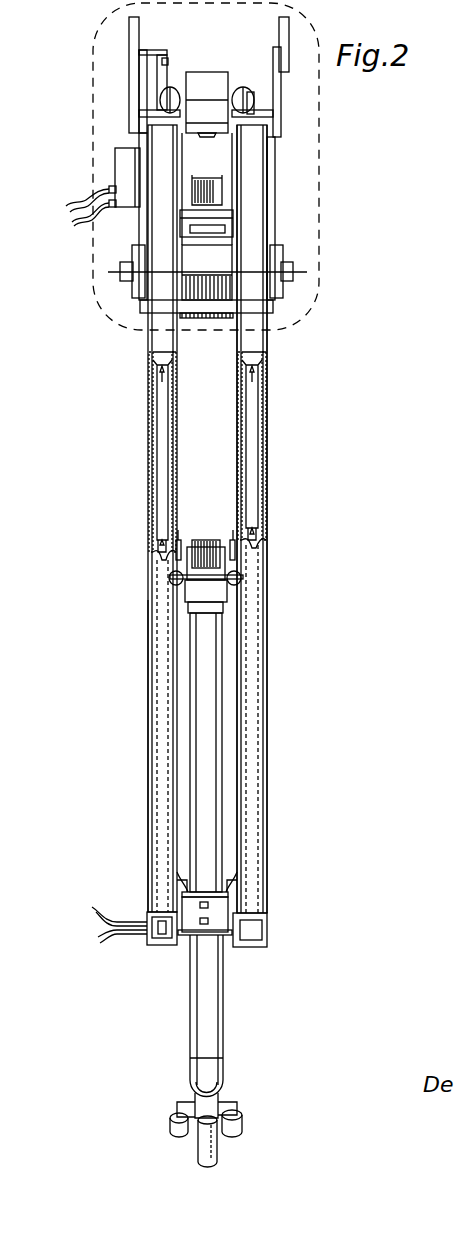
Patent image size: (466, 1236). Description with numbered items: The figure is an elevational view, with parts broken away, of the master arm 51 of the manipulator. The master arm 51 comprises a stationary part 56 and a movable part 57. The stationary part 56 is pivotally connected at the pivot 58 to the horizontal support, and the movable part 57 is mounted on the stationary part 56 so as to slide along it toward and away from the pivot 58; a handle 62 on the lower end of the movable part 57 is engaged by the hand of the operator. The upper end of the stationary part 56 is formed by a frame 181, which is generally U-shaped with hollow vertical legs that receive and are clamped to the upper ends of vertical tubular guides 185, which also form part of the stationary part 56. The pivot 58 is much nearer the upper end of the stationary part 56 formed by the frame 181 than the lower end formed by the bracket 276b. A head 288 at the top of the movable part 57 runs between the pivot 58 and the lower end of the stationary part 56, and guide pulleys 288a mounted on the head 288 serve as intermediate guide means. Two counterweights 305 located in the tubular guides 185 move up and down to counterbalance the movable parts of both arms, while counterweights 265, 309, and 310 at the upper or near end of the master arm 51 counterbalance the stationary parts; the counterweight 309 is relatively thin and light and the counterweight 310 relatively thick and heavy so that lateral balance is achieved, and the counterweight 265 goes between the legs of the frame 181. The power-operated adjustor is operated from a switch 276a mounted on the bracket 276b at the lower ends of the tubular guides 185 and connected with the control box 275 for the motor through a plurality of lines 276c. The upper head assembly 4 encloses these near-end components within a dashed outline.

The head assembly 4 is at (318, 160).
The counterweight 309 is at (130, 31).
The counterweight 310 is at (280, 30).
The counterweight 265 is at (198, 84).
The frame 181 is at (300, 228).
The pivot 58 is at (120, 272).
The control box 275 is at (127, 163).
The lines 276c is at (86, 196).
The master arm 51 is at (275, 389).
The tubular guides 185 is at (160, 757).
The counterweights 305 is at (160, 457).
The guide pulleys 288a is at (204, 540).
The head 288 is at (195, 590).
The stationary part 56 is at (148, 688).
The switch 276a is at (162, 945).
The bracket 276b is at (190, 934).
The movable part 57 is at (230, 1008).
The handle 62 is at (218, 1146).